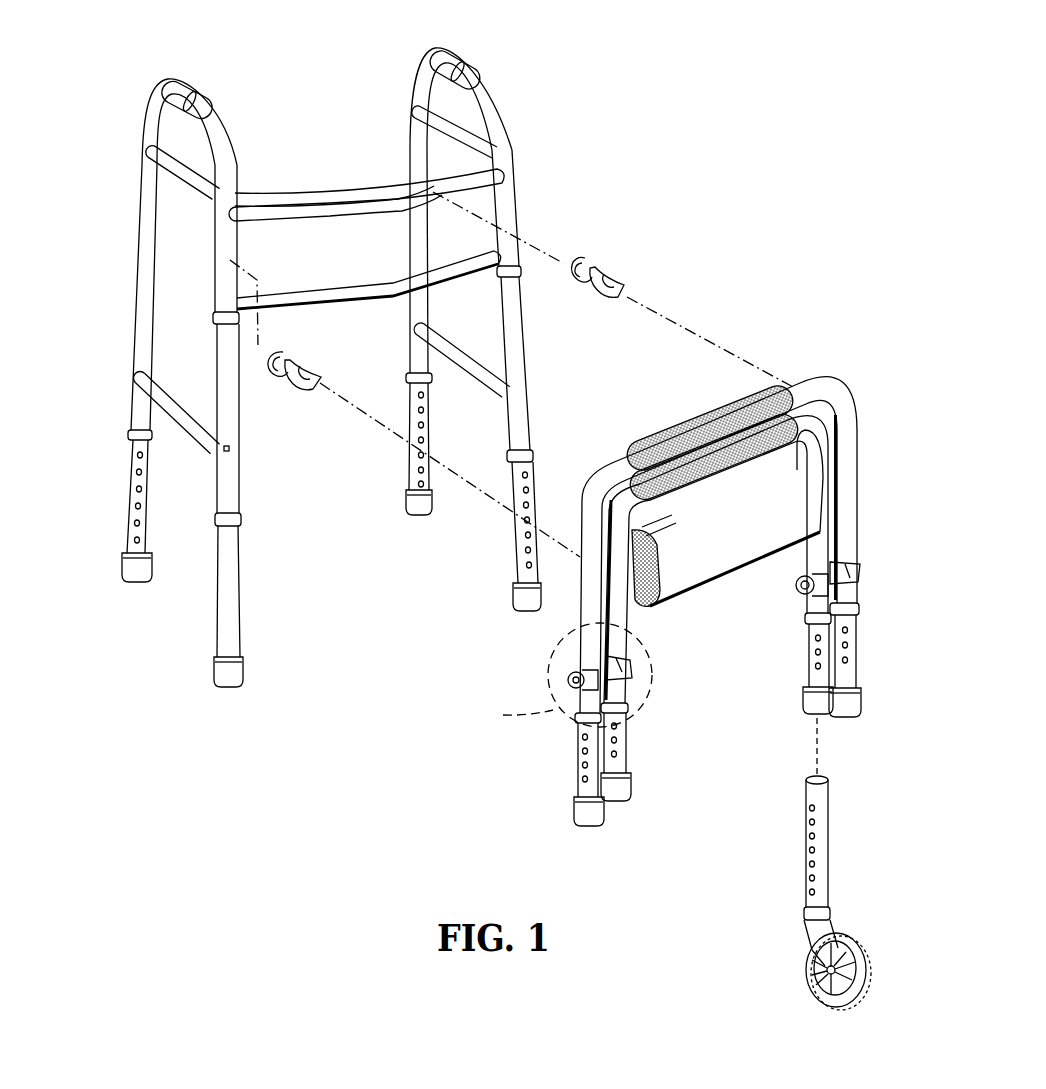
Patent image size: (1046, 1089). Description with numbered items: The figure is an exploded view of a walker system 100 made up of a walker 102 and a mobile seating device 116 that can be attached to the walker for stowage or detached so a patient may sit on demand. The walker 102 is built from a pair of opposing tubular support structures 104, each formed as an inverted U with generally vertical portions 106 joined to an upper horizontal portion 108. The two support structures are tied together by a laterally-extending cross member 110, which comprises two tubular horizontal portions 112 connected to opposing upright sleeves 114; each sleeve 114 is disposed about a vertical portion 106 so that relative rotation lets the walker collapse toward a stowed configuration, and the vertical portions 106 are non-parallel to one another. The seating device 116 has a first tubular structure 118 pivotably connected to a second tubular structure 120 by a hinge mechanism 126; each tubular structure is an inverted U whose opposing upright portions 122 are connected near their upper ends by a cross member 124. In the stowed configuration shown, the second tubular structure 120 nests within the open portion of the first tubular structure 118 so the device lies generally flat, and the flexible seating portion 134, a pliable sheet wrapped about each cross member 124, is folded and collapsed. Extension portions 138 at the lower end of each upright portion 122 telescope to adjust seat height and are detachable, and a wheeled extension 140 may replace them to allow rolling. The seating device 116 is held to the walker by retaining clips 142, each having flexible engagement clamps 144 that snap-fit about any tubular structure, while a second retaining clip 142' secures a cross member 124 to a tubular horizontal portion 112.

The walker system 100 is at (705, 168).
The walker 102 is at (287, 137).
The tubular support structures 104 is at (138, 173).
The vertical portions 106 is at (137, 337).
The upper horizontal portion 108 is at (193, 82).
The cross member 110 is at (380, 193).
The tubular horizontal portions 112 is at (300, 217).
The upright sleeves 114 is at (520, 213).
The mobile seating device 116 is at (716, 410).
The first tubular structure 118 is at (863, 480).
The second tubular structure 120 is at (840, 540).
The upright portions 122 is at (580, 600).
The cross member 124 is at (607, 463).
The hinge mechanism 126 is at (867, 573).
The flexible seating portion 134 is at (742, 534).
The extension portions 138 is at (860, 653).
The wheeled extension 140 is at (830, 853).
The retaining clip 142 is at (300, 415).
The second retaining clip 142' is at (625, 244).
The flexible engagement clamp 144 is at (625, 287).